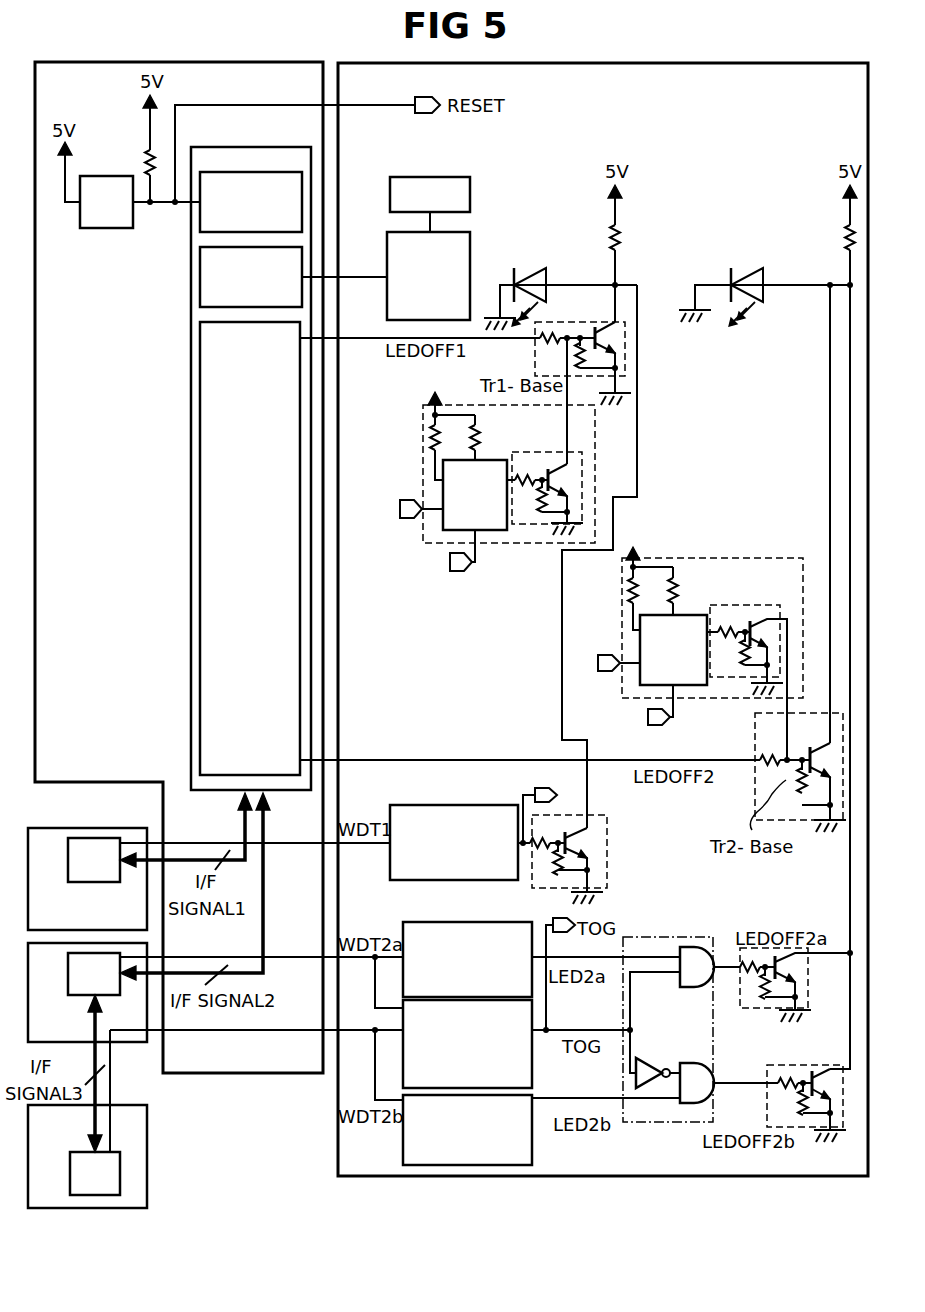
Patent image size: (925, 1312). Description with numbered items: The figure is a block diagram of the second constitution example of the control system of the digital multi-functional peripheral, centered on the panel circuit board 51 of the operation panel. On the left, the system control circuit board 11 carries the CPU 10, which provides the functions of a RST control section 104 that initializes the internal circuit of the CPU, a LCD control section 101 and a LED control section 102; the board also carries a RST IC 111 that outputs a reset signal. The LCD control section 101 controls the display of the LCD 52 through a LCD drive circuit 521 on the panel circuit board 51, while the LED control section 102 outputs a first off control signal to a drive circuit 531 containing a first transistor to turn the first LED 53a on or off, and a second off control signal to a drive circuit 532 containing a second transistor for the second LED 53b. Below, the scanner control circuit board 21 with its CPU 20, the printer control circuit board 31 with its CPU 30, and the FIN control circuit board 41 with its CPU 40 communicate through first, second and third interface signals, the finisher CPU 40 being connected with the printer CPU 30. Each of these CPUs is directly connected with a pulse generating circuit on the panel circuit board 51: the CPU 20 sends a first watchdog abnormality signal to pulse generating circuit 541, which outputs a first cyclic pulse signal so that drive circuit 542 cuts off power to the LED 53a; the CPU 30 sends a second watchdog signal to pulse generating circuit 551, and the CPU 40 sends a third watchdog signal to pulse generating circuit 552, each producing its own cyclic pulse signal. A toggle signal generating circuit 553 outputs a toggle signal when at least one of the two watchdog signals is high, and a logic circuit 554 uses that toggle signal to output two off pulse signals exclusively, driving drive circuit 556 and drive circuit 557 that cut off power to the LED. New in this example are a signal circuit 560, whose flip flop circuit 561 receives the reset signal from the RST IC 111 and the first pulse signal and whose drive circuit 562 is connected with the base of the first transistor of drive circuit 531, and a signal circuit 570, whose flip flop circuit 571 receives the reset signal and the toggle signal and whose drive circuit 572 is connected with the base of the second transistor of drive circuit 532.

The control circuit board 11 is at (190, 63).
The CPU 10 is at (250, 147).
The RST IC 111 is at (104, 176).
The RST control section 104 is at (197, 222).
The LCD control section 101 is at (200, 287).
The LED control section 102 is at (200, 482).
The panel circuit board 51 is at (561, 63).
The LCD 52 is at (431, 177).
The LCD drive circuit 521 is at (470, 252).
The LED 53a is at (530, 260).
The LED 53b is at (748, 263).
The drive circuit 531 is at (627, 352).
The drive circuit 532 is at (755, 803).
The signal circuit 560 is at (475, 477).
The flip flop circuit 561 is at (443, 488).
The drive circuit 562 is at (534, 452).
The signal circuit 570 is at (685, 642).
The flip flop circuit 571 is at (640, 639).
The drive circuit 572 is at (732, 605).
The pulse generating circuit 541 is at (456, 805).
The drive circuit 542 is at (608, 838).
The pulse generating circuit 551 is at (467, 922).
The pulse generating circuit 552 is at (533, 1125).
The toggle signal generating circuit 553 is at (533, 1052).
The logic circuit 554 is at (670, 1122).
The drive circuit 556 is at (748, 1010).
The drive circuit 557 is at (831, 1063).
The control circuit board 21 is at (89, 828).
The CPU 20 is at (95, 883).
The control circuit board 31 is at (129, 1043).
The CPU 30 is at (78, 996).
The control circuit board 41 is at (147, 1149).
The CPU 40 is at (120, 1176).